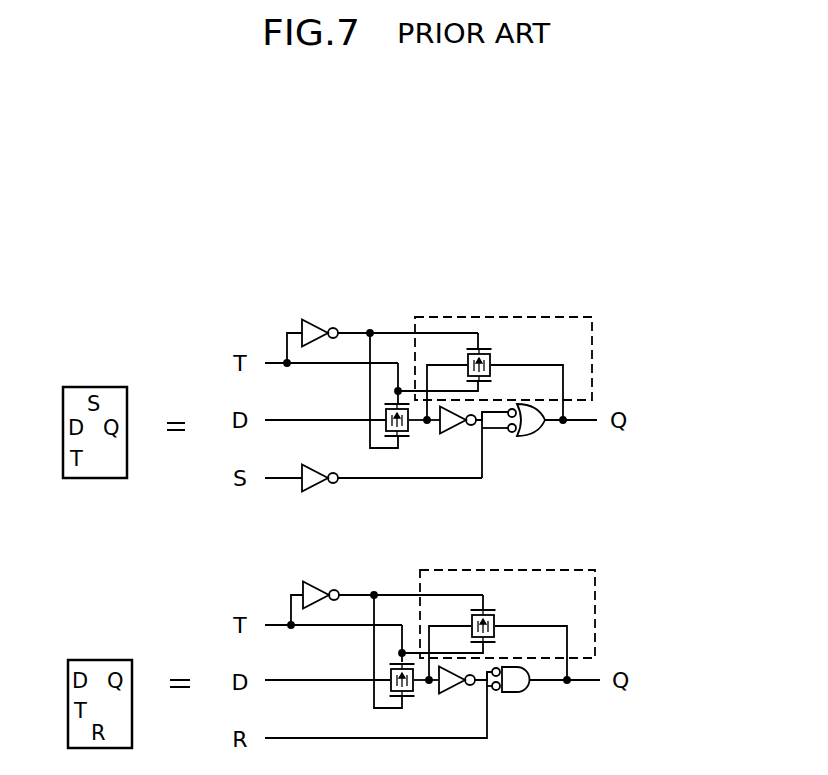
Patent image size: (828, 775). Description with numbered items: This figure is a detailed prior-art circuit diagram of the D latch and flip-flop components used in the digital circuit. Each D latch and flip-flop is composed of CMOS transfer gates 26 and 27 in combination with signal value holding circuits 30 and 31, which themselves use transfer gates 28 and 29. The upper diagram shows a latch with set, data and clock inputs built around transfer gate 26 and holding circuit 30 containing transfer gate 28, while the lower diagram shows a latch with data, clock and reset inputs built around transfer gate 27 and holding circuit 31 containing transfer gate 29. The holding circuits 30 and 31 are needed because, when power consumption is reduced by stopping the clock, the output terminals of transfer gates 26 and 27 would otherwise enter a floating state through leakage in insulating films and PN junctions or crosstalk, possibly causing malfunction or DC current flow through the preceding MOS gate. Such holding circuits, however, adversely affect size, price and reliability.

The CMOS transfer gate 26 is at (403, 438).
The CMOS transfer gate 27 is at (413, 697).
The transfer gate 28 is at (492, 352).
The transfer gate 29 is at (497, 616).
The signal value holding circuit 30 is at (593, 362).
The signal value holding circuit 31 is at (597, 603).